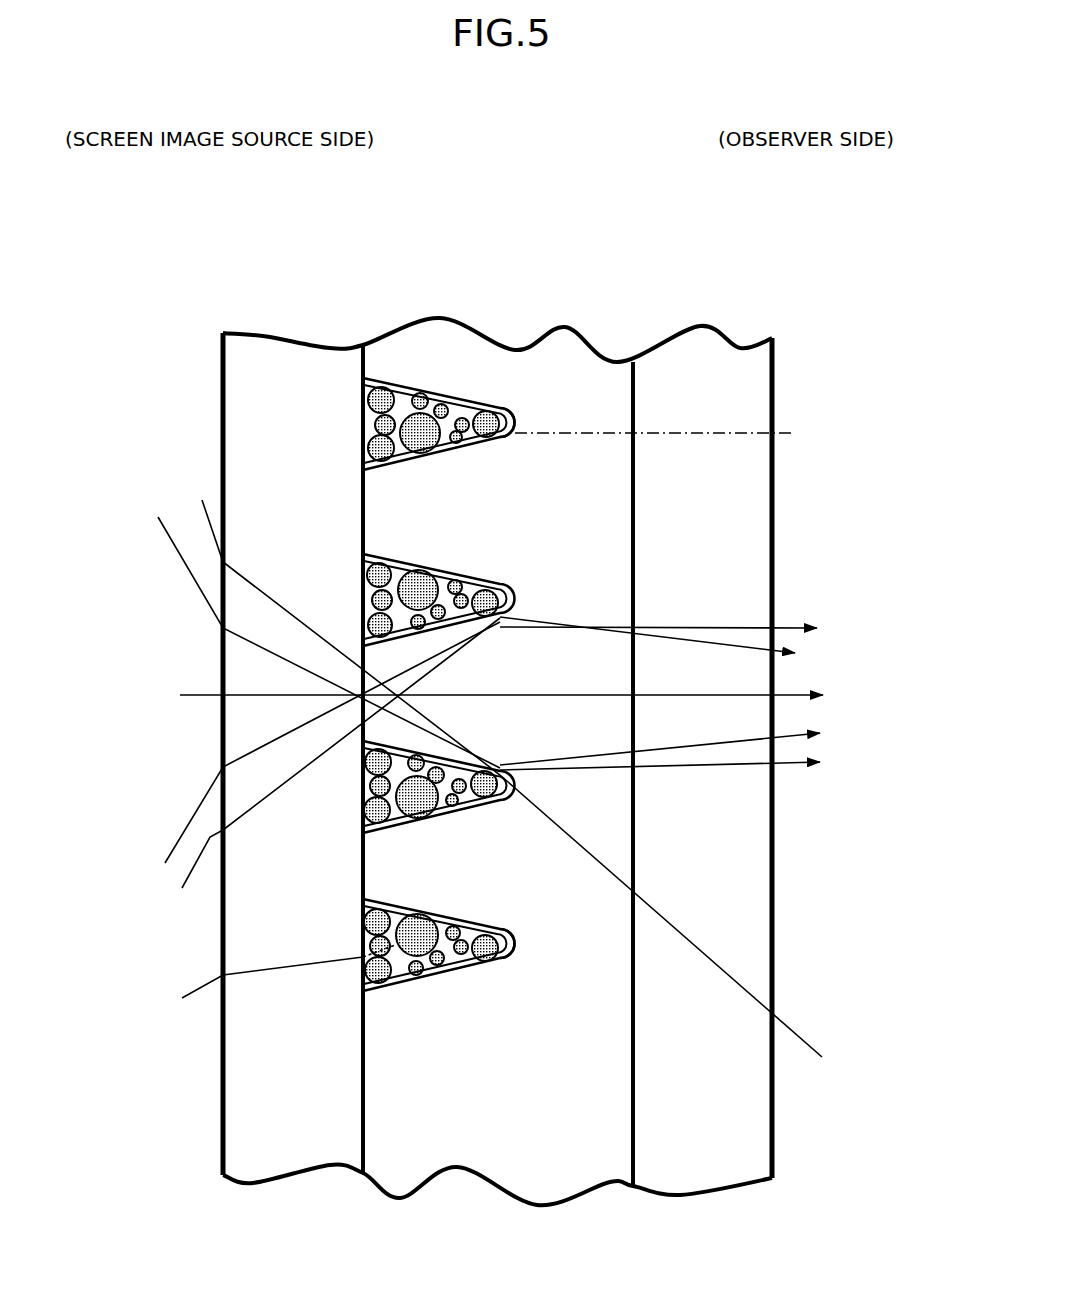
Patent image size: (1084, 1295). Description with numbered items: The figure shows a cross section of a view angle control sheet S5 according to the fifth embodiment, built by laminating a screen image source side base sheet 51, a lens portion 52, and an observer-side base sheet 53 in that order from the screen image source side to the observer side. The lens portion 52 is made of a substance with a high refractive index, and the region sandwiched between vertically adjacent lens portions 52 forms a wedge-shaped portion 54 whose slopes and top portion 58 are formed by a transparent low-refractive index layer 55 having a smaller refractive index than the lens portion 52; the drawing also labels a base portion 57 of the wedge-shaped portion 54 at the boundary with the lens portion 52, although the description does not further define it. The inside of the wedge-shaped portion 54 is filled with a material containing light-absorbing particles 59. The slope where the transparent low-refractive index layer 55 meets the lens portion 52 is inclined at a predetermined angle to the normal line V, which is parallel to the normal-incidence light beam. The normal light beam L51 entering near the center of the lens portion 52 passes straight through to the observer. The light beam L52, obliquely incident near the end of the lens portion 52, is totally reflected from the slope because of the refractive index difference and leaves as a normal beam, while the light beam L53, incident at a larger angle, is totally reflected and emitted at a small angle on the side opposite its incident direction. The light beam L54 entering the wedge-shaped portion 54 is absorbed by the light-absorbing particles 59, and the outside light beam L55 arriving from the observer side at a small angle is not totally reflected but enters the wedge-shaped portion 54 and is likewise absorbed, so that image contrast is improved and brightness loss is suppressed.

The screen image source side base sheet 51 is at (272, 376).
The lens portion 52 is at (509, 368).
The observer-side base sheet 53 is at (683, 360).
The wedge-shaped portion 54 is at (398, 385).
The transparent low-refractive index layer 55 is at (450, 388).
The base surface of wedge portion 57 is at (363, 432).
The top portion 58 is at (515, 425).
The light-absorbing particles 59 is at (363, 398).
The normal line V is at (668, 433).
The view angle control sheet S5 is at (769, 293).
The normal light beam L51 is at (525, 697).
The light beam L52 is at (516, 742).
The light beam L53 is at (524, 752).
The light beam L54 is at (256, 978).
The outside light beam L55 is at (514, 792).